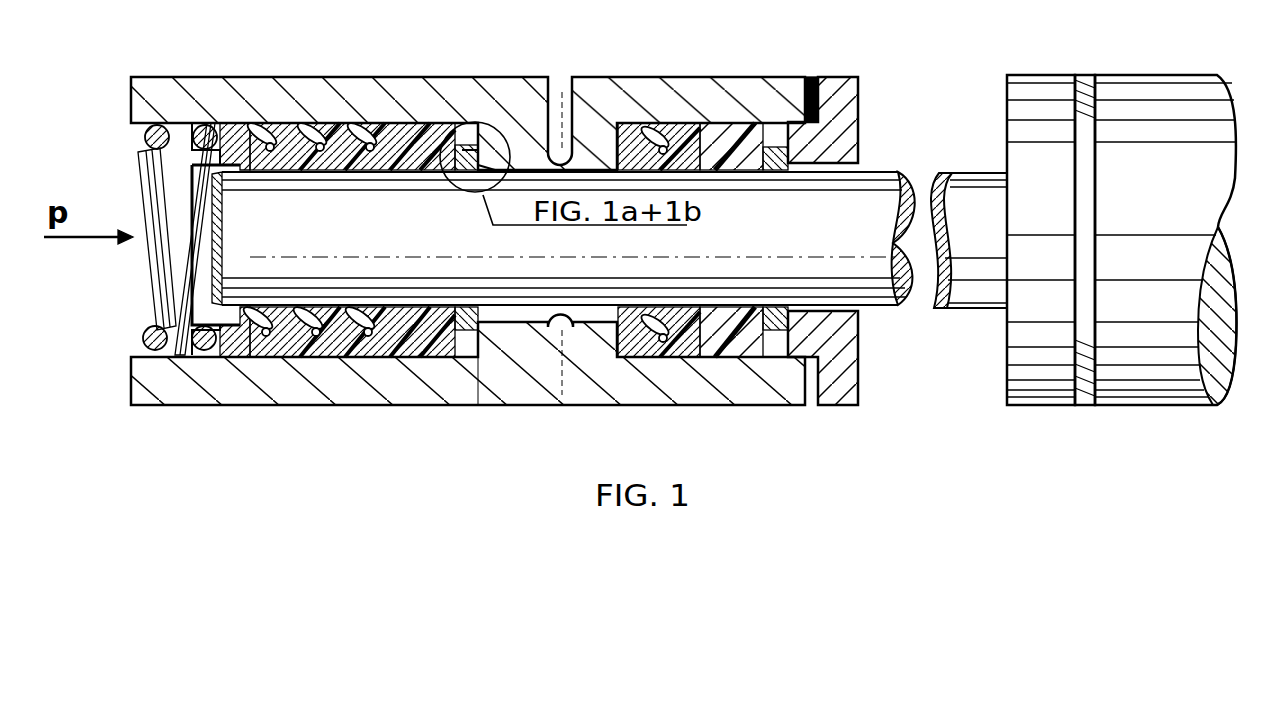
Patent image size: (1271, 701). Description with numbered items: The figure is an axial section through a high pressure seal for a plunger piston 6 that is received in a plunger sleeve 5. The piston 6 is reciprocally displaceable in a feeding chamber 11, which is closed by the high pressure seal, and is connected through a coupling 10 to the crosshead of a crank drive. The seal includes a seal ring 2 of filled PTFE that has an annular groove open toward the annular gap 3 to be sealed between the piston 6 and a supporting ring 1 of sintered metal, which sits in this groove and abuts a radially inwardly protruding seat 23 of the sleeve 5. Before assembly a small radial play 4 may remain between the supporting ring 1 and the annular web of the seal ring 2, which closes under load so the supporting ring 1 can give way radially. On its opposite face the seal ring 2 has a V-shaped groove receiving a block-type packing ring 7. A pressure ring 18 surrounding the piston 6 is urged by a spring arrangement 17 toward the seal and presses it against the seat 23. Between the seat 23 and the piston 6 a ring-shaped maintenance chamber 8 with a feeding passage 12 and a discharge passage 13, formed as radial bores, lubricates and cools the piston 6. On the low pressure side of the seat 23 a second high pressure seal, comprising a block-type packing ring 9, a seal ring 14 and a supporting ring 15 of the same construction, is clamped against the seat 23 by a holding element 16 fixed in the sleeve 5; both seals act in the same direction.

The supporting ring 1 is at (478, 152).
The seal ring 2 is at (417, 345).
The annular gap 3 is at (487, 165).
The radial play 4 is at (462, 128).
The plunger sleeve 5 is at (247, 88).
The plunger piston 6 is at (323, 272).
The block-type packing ring 7 is at (257, 350).
The maintenance chamber 8 is at (592, 160).
The block-type packing ring 9 is at (655, 137).
The coupling 10 is at (1028, 95).
The feeding chamber 11 is at (163, 294).
The feeding passage 12 is at (560, 93).
The discharge passage 13 is at (560, 338).
The seal ring 14 is at (725, 345).
The supporting ring 15 is at (773, 343).
The holding element 16 is at (842, 390).
The spring arrangement 17 is at (147, 130).
The pressure ring 18 is at (209, 126).
The seat 23 is at (503, 363).